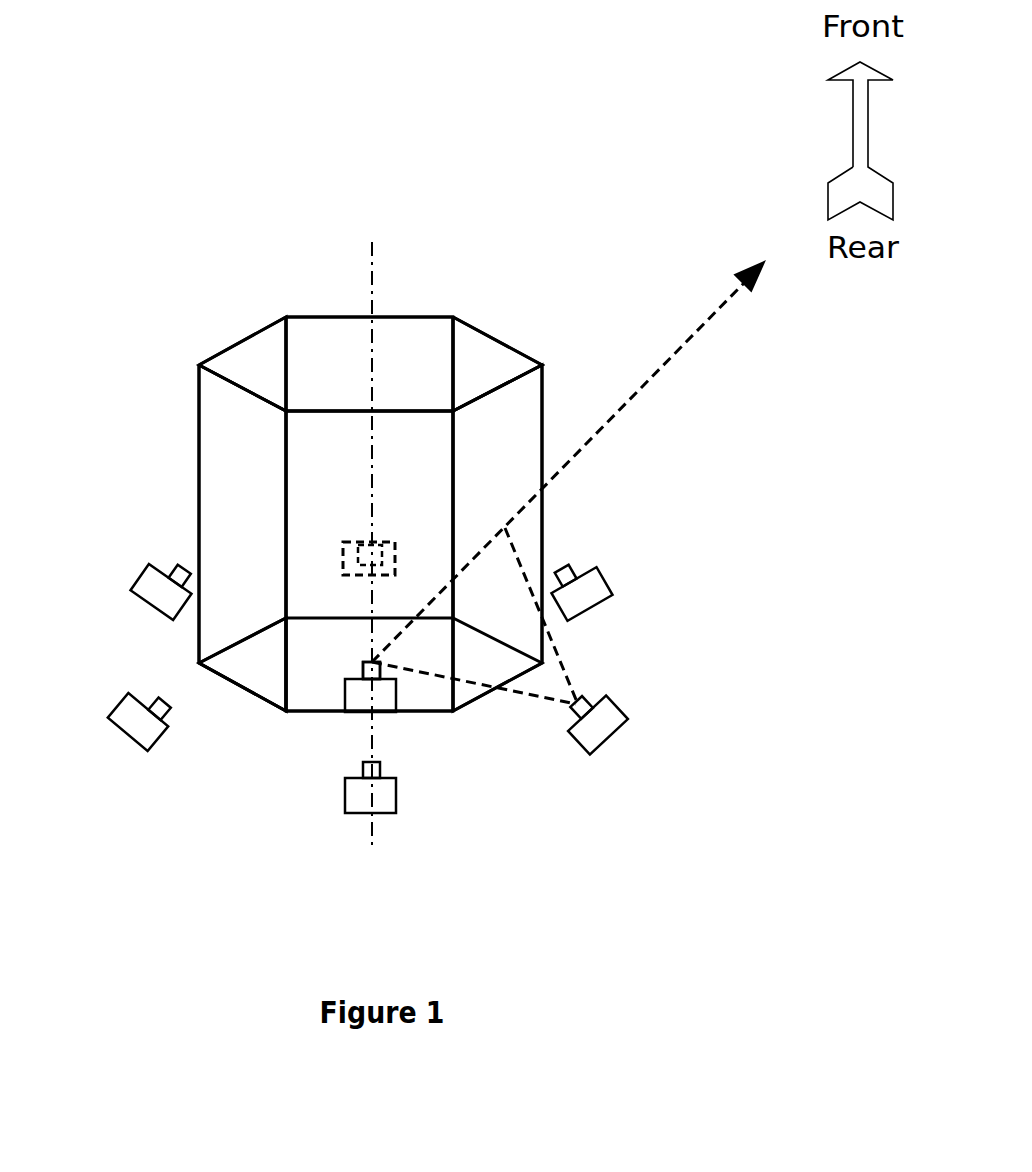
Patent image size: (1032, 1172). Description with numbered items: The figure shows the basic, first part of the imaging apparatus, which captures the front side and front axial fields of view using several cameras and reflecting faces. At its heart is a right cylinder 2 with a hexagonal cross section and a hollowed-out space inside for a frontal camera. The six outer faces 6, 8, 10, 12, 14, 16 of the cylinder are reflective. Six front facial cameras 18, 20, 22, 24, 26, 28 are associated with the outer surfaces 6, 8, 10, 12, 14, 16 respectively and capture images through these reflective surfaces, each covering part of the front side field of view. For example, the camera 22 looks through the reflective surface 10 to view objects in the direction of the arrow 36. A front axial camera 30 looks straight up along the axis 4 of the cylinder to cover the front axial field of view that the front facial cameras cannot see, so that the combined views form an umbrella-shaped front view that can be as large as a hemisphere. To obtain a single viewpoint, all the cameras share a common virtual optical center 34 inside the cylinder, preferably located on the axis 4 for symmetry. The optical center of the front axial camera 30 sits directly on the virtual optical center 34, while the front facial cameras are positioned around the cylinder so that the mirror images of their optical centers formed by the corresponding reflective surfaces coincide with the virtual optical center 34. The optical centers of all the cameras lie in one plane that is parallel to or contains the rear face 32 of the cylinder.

The right cylinder 2 is at (335, 380).
The axis 4 is at (406, 510).
The outer face 6 is at (405, 342).
The outer face 8 is at (495, 365).
The outer face 10 is at (512, 408).
The outer face 12 is at (337, 462).
The outer face 14 is at (258, 426).
The outer face 16 is at (250, 368).
The front facial camera 18 is at (362, 557).
The front facial camera 20 is at (590, 590).
The front facial camera 22 is at (603, 722).
The front facial camera 24 is at (373, 798).
The front facial camera 26 is at (138, 730).
The front facial camera 28 is at (153, 595).
The front axial camera 30 is at (377, 698).
The rear face 32 is at (272, 673).
The virtual optical center 34 is at (371, 676).
The arrow 36 is at (567, 457).